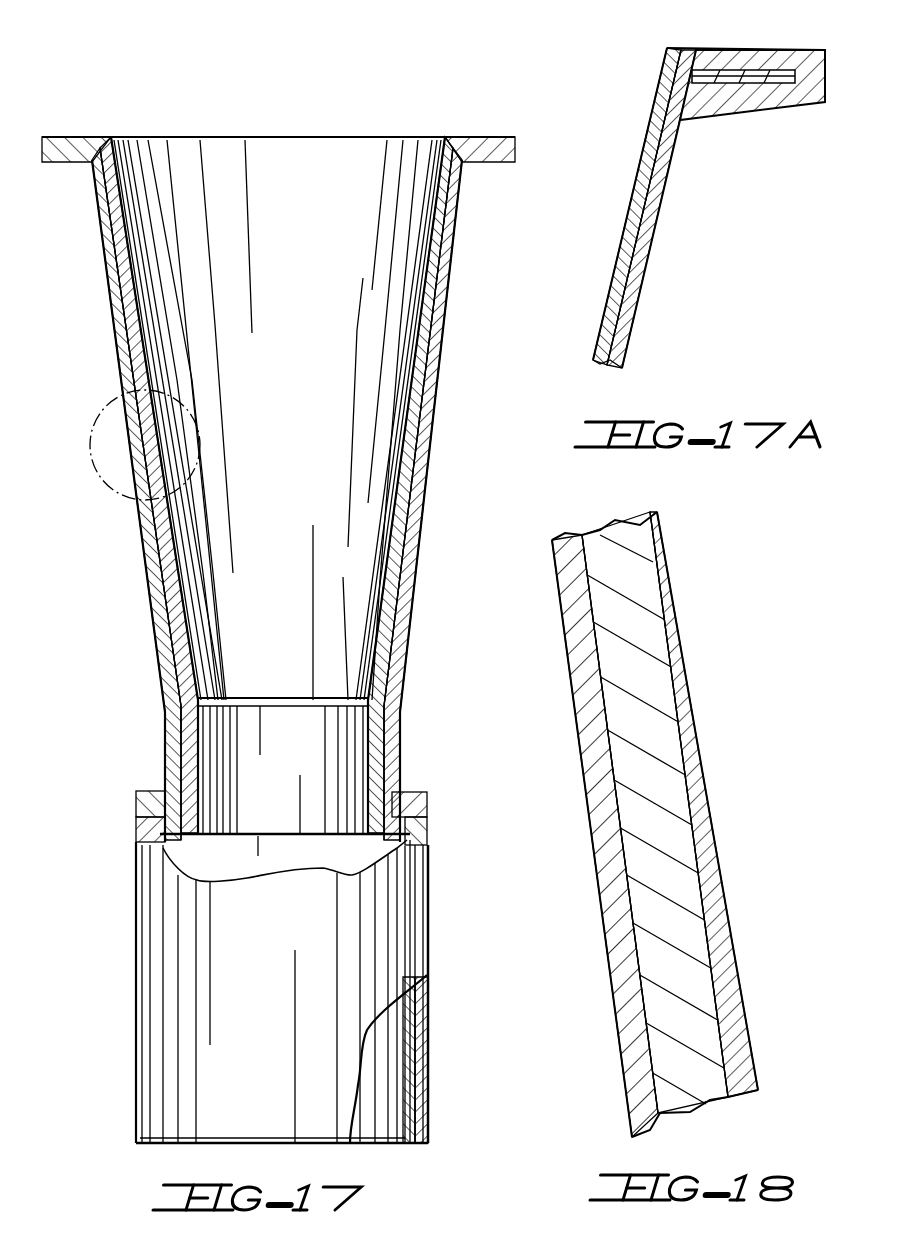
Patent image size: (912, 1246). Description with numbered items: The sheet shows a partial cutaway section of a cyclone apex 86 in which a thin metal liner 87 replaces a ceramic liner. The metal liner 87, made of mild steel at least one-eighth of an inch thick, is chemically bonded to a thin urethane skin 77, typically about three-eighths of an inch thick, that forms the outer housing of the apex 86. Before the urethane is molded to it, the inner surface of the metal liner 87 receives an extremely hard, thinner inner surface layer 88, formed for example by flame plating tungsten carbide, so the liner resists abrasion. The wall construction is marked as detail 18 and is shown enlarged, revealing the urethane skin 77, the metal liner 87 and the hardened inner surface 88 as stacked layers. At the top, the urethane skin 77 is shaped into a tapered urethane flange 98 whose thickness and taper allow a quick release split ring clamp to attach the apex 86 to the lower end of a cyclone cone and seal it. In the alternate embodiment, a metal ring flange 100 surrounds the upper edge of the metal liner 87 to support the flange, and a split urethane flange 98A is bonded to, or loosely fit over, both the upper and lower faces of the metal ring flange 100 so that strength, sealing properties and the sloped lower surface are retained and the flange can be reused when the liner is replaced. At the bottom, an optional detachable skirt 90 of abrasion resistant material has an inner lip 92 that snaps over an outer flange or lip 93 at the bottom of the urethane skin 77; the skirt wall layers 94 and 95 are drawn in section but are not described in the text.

In FIG. 17, the detail 18 is at (98, 478).
In FIG. 17, the urethane skin 77 is at (269, 489).
In FIG. 18, the urethane skin 77 is at (592, 752).
In FIG. 17, the apex 86 is at (128, 612).
In FIG. 17, the metal liner 87 is at (152, 518).
In FIG. 17A, the metal liner 87 is at (653, 236).
In FIG. 18, the metal liner 87 is at (668, 748).
In FIG. 17, the hardened inner surface 88 is at (153, 562).
In FIG. 17A, the hardened inner surface 88 is at (636, 180).
In FIG. 18, the hardened inner surface 88 is at (683, 690).
In FIG. 17, the detachable skirt 90 is at (267, 988).
In FIG. 17, the inner lip 92 is at (156, 802).
In FIG. 17, the outer flange or lip 93 is at (150, 836).
In FIG. 17, the outer sleeve layer 94 is at (412, 1108).
In FIG. 17, the inner sleeve layer 95 is at (422, 1048).
In FIG. 17, the urethane flange 98 is at (70, 150).
In FIG. 17A, the split urethane flange 98A is at (773, 69).
In FIG. 17A, the metal ring flange 100 is at (772, 58).